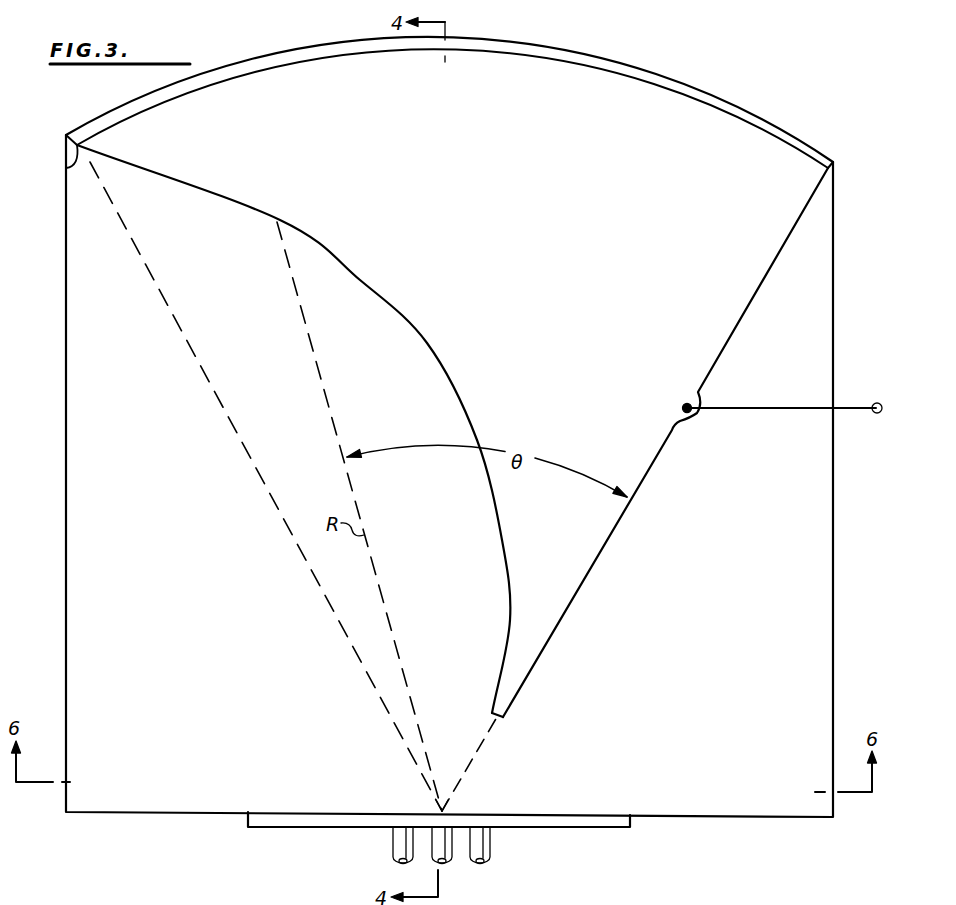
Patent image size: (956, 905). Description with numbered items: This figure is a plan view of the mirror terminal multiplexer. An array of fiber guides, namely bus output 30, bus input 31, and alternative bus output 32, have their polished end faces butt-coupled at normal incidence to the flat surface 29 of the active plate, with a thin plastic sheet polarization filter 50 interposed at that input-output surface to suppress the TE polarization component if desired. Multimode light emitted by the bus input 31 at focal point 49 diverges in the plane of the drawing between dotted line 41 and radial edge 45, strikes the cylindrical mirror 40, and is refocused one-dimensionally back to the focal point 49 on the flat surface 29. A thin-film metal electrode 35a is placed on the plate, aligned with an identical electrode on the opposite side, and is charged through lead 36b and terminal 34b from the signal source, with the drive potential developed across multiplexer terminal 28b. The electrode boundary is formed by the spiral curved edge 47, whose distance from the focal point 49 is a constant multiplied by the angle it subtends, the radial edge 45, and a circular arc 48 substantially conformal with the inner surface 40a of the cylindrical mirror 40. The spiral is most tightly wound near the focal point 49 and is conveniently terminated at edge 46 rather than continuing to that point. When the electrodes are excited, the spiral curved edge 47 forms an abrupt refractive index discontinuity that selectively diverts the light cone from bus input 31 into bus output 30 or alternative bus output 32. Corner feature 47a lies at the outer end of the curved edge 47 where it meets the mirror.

The multiplexer terminal 28b is at (878, 403).
The flat surface 29 is at (752, 818).
The bus output fiber guide 30 is at (393, 838).
The bus input fiber guide 31 is at (448, 852).
The alternative bus output fiber guide 32 is at (490, 848).
The terminal 34b is at (686, 404).
The electrode 35a is at (718, 111).
The lead 36b is at (782, 408).
The cylindrical mirror 40 is at (283, 52).
The inner surface of cylindrical mirror 40a is at (583, 66).
The dotted line 41 is at (212, 386).
The radial edge 45 is at (762, 287).
The edge 46 is at (513, 701).
The spiral curved edge 47 is at (503, 547).
The corner notch 47a is at (66, 168).
The circular arc 48 is at (428, 52).
The focal point 49 is at (445, 808).
The polarization filter 50 is at (592, 830).